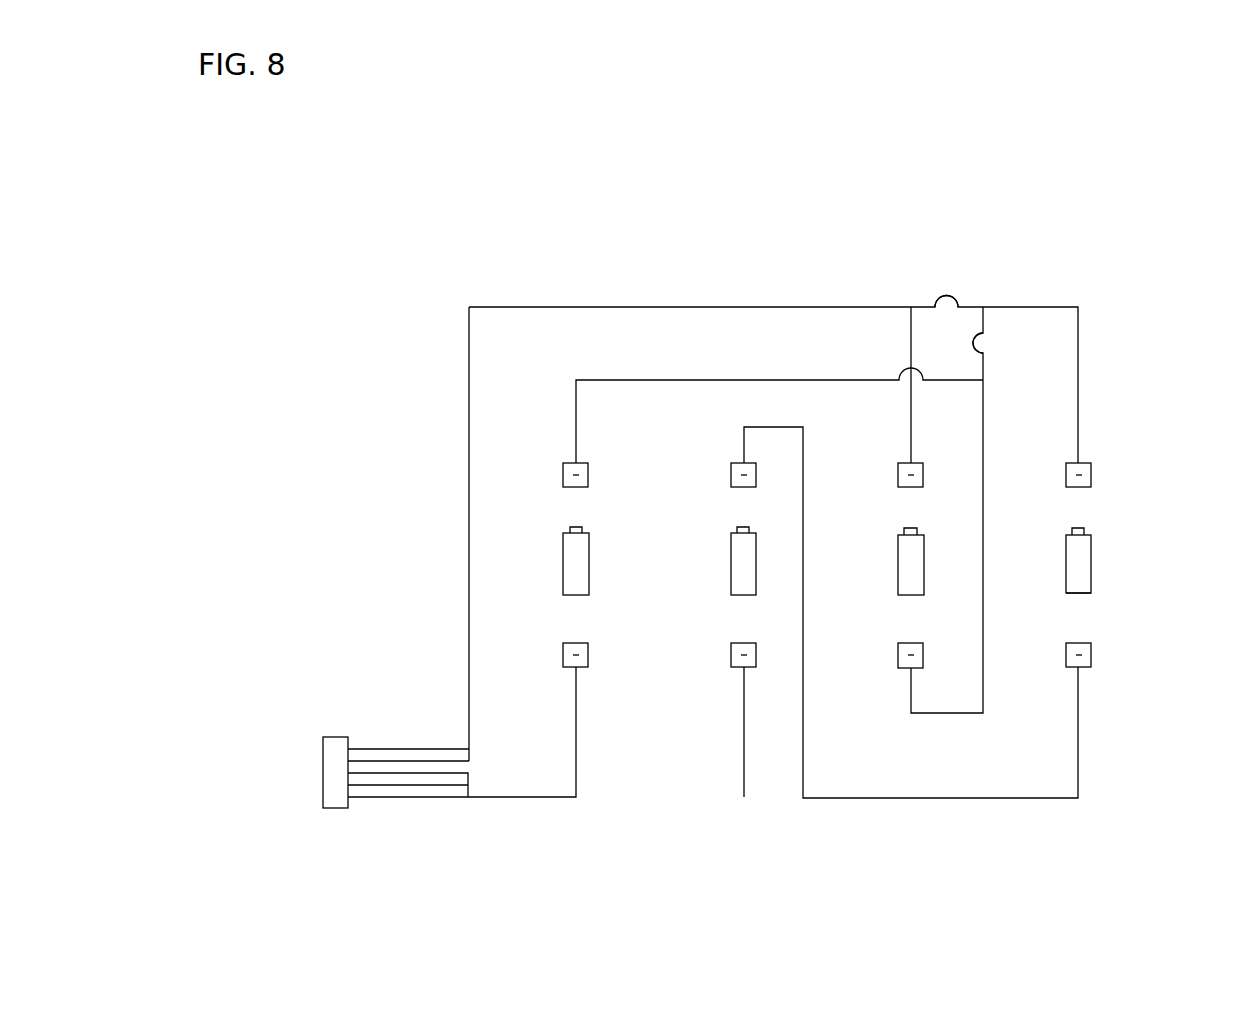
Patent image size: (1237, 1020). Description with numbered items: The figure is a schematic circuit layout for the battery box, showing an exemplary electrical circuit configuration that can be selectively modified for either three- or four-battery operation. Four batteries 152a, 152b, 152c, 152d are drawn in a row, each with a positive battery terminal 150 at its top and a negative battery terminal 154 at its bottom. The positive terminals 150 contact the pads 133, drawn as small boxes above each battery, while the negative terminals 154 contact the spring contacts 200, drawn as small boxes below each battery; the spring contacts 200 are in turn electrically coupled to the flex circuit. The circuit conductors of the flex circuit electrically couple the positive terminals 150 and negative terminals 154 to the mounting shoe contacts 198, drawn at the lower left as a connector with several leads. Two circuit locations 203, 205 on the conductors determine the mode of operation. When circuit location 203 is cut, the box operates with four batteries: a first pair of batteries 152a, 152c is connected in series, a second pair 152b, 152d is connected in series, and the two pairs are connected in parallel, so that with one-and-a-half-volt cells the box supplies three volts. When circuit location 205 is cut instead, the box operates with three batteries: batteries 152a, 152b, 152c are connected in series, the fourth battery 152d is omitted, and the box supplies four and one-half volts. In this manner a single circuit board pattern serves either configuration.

The pads 133 is at (565, 463).
The positive battery terminals 150 is at (1082, 529).
The battery 152a is at (1148, 560).
The battery 152b is at (898, 592).
The battery 152c is at (731, 556).
The battery 152d is at (563, 567).
The negative battery terminals 154 is at (1076, 592).
The mounting shoe contacts 198 is at (333, 744).
The spring contacts 200 is at (729, 670).
The circuit location 203 is at (972, 335).
The circuit location 205 is at (940, 294).